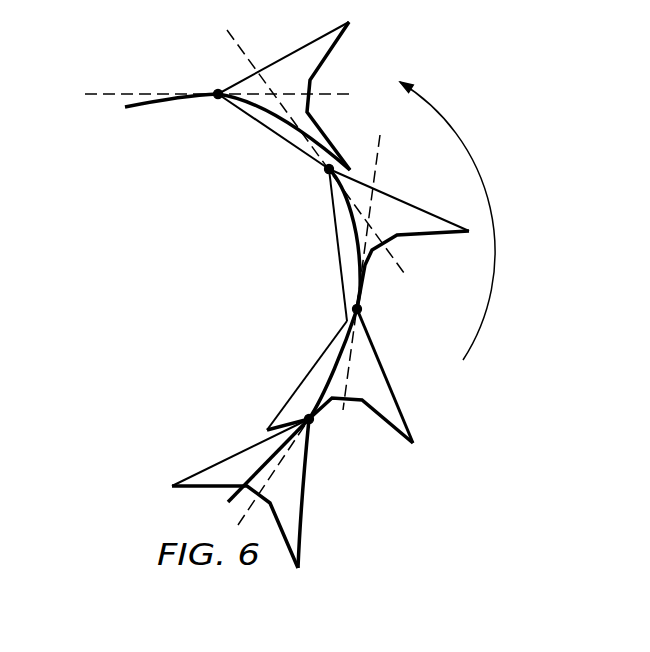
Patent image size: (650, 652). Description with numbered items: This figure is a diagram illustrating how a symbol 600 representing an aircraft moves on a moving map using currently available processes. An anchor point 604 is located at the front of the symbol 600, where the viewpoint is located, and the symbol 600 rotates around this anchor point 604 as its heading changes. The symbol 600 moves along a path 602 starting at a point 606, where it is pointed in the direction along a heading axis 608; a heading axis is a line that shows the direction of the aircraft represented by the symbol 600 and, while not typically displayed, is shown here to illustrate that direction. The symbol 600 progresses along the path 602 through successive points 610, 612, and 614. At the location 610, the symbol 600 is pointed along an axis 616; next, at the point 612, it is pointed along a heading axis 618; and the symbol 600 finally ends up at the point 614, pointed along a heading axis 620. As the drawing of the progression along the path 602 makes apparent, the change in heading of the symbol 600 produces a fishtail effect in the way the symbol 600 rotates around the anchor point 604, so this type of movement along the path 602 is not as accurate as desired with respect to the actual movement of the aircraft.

The symbol 600 is at (302, 523).
The path 602 is at (125, 107).
The anchor point 604 is at (217, 90).
The point 606 is at (317, 423).
The heading axis 608 is at (357, 345).
The point 610 is at (364, 305).
The point 612 is at (320, 165).
The point 614 is at (215, 104).
The axis 616 is at (375, 175).
The heading axis 618 is at (268, 43).
The heading axis 620 is at (107, 93).